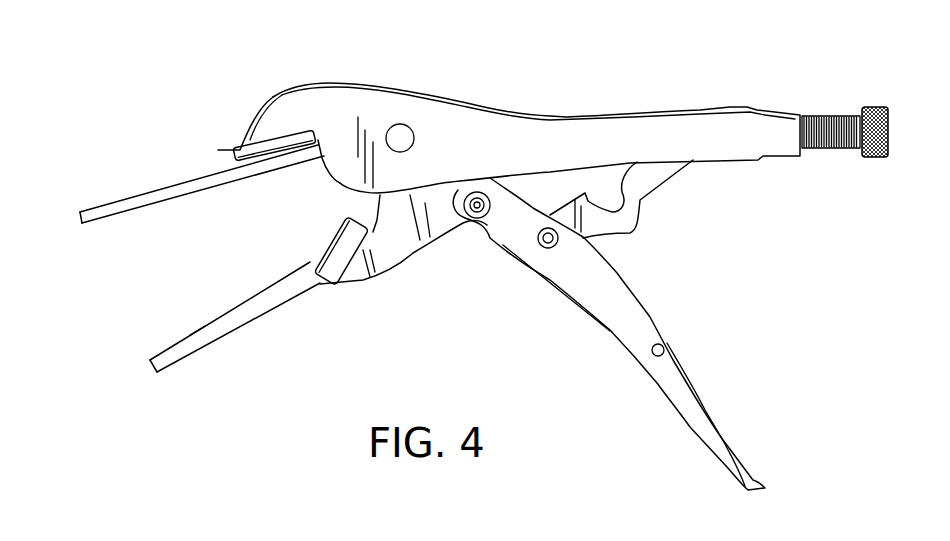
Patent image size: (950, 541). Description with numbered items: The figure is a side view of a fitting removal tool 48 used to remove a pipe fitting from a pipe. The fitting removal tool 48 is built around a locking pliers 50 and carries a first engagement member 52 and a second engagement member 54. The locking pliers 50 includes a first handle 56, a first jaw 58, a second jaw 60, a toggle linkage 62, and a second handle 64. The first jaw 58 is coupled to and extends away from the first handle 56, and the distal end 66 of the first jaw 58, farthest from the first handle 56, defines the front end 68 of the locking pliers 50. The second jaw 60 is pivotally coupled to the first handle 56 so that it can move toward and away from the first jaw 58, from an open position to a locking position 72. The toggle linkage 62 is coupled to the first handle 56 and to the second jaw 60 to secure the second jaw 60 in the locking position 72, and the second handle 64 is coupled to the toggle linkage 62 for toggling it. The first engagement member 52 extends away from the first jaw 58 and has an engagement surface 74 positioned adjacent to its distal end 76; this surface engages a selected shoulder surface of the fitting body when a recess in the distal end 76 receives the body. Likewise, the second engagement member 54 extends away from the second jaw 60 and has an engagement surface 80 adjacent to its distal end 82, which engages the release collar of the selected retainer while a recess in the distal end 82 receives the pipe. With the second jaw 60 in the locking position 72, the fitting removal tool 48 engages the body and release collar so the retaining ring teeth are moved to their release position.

The fitting removal tool 48 is at (611, 57).
The locking pliers 50 is at (525, 133).
The first engagement member 52 is at (128, 198).
The second engagement member 54 is at (217, 335).
The first handle 56 is at (723, 127).
The first jaw 58 is at (276, 147).
The second jaw 60 is at (360, 267).
The toggle linkage 62 is at (827, 322).
The second handle 64 is at (612, 315).
The distal end 66 is at (233, 149).
The front end 68 is at (230, 160).
The locking position 72 is at (88, 0).
The engagement surface 74 is at (128, 212).
The distal end 76 is at (77, 215).
The engagement surface 80 is at (197, 333).
The distal end 82 is at (153, 363).